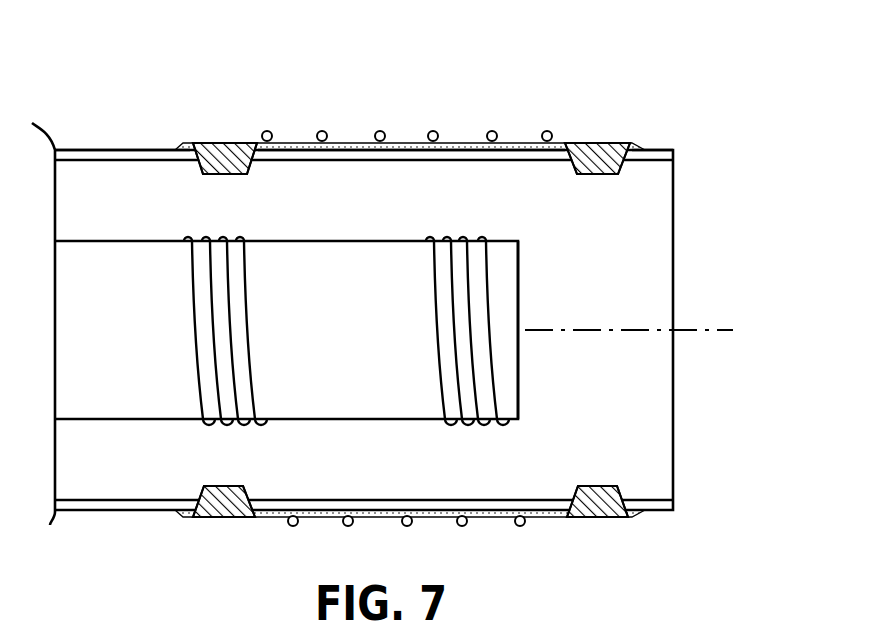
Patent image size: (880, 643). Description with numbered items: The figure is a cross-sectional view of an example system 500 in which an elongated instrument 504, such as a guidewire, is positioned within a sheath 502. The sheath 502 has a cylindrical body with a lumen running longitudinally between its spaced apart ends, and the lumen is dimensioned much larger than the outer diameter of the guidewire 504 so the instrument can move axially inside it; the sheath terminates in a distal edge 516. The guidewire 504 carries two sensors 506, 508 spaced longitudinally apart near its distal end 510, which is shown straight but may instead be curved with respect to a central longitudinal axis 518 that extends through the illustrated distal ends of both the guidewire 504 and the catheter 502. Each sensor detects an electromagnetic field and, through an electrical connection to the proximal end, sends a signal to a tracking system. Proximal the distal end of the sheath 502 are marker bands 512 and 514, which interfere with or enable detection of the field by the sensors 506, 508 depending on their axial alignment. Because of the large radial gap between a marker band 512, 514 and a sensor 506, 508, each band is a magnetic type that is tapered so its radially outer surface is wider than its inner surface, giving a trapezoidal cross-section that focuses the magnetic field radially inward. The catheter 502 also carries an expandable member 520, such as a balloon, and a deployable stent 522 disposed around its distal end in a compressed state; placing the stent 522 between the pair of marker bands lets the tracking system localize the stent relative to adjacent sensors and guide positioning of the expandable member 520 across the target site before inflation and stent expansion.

The system 500 is at (676, 80).
The sheath 502 is at (150, 148).
The elongated instrument 504 is at (340, 241).
The sensor 506 is at (194, 226).
The sensor 508 is at (472, 224).
The distal end 510 is at (520, 372).
The marker band 512 is at (246, 173).
The marker band 514 is at (575, 172).
The distal edge 516 is at (673, 200).
The central longitudinal axis 518 is at (700, 330).
The expandable member 520 is at (565, 142).
The deployable stent 522 is at (327, 133).